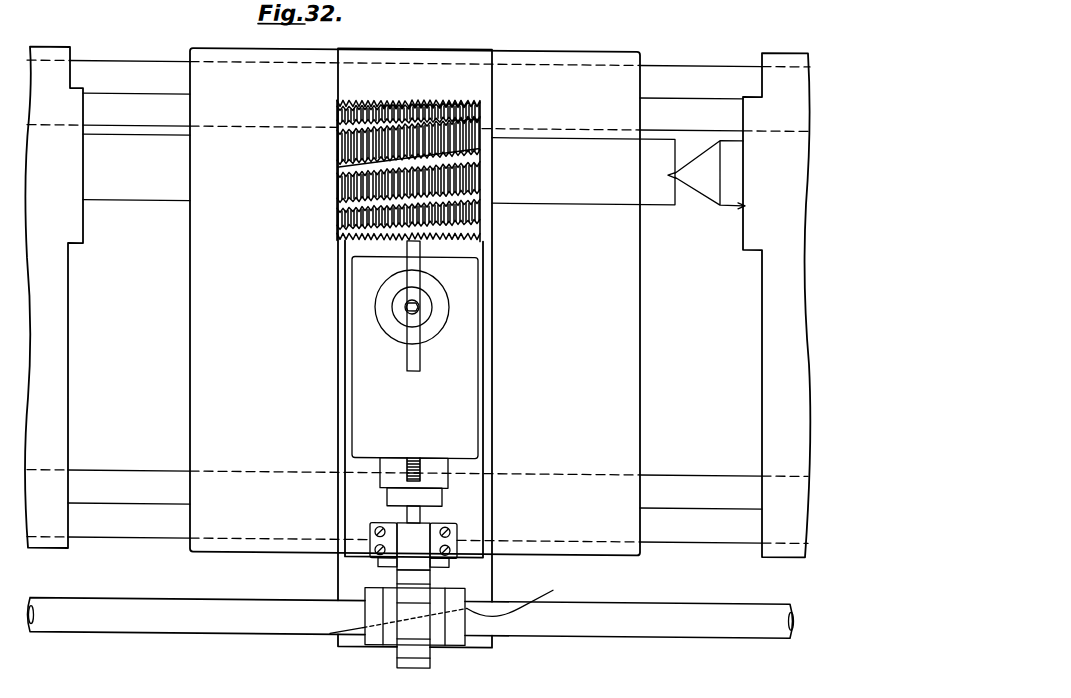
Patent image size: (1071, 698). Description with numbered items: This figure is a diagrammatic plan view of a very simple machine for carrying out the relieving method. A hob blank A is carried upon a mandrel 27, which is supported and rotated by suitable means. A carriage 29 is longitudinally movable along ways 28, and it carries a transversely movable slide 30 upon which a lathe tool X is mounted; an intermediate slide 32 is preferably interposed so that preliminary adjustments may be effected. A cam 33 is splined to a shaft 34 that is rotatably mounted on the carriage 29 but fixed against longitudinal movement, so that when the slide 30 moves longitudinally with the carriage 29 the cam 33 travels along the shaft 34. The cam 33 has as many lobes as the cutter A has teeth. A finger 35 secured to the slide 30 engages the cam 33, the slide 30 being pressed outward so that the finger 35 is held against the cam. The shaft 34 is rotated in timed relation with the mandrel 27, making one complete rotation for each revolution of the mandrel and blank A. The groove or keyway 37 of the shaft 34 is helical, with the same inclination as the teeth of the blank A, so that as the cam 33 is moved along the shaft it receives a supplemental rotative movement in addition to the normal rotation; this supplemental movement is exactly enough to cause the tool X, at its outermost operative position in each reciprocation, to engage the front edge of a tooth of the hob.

The mandrel 27 is at (598, 188).
The ways 28 is at (702, 87).
The carriage 29 is at (628, 404).
The slide 30 is at (478, 250).
The intermediate slide 32 is at (468, 360).
The cam 33 is at (420, 648).
The shaft 34 is at (672, 603).
The finger 35 is at (413, 547).
The groove or keyway 37 is at (458, 605).
The hob blank A is at (483, 164).
The lathe tool X is at (416, 265).